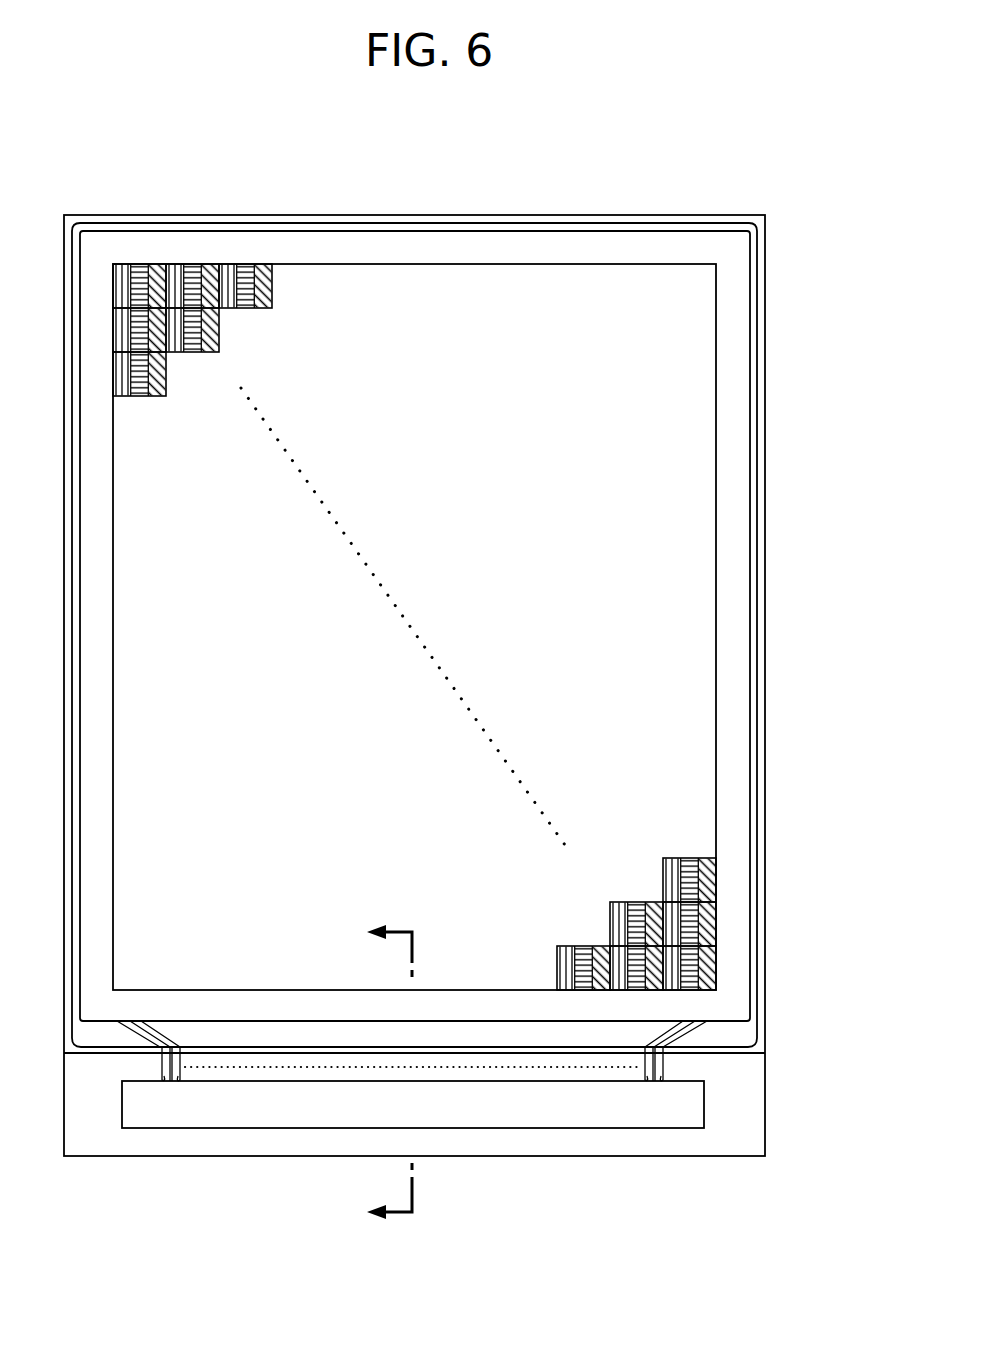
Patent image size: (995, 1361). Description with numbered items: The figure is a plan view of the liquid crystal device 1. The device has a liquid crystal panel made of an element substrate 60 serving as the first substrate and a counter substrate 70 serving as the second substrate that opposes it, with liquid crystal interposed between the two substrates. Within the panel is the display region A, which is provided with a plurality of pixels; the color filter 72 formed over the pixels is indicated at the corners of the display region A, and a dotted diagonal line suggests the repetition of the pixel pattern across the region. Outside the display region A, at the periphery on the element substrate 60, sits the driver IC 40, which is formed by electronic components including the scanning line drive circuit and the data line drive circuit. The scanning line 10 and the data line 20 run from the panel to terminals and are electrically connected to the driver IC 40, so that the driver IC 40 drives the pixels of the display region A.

The liquid crystal device 1 is at (616, 190).
The scanning line 10 is at (167, 1083).
The data line 20 is at (652, 1084).
The driver IC 40 is at (521, 1128).
The element substrate 60 is at (765, 1116).
The counter substrate 70 is at (727, 1058).
The color filter 72 is at (273, 287).
The display region A is at (423, 263).